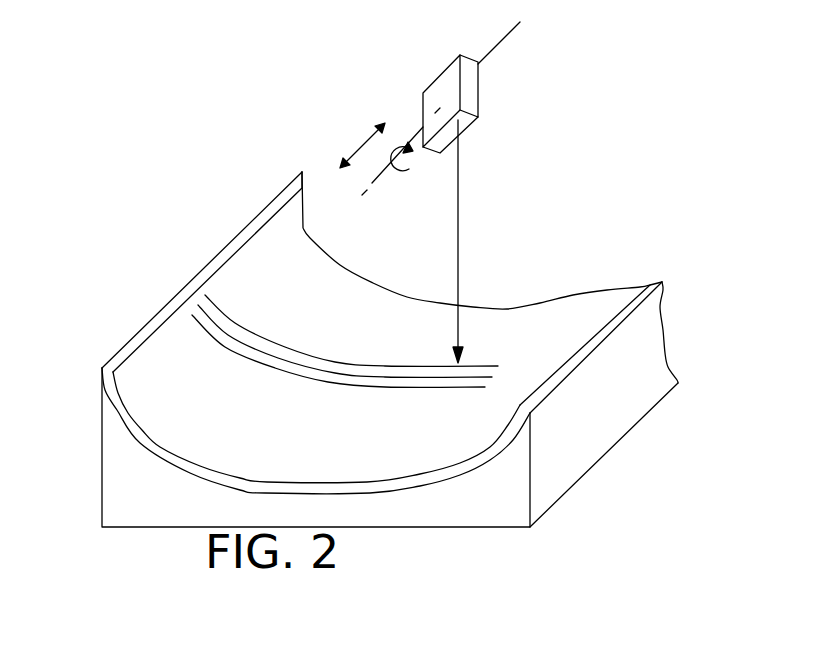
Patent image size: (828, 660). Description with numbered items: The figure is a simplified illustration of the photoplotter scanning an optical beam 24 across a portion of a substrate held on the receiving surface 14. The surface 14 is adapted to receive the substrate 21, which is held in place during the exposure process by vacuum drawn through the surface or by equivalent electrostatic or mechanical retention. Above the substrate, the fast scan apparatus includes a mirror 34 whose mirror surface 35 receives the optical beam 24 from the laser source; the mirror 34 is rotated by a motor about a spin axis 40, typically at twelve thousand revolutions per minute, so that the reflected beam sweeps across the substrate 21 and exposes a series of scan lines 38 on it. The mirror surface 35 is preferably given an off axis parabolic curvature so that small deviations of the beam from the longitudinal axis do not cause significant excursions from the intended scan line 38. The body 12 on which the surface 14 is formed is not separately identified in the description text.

The mold block 12 is at (125, 465).
The thin layer on mold surface 14 is at (128, 349).
The concave channel surface 21 is at (163, 353).
The laser beam 24 is at (458, 160).
The laser head 34 is at (440, 93).
The laser head output face 35 is at (477, 118).
The grooves in channel surface 38 is at (252, 336).
The laser axis motion 40 is at (372, 183).